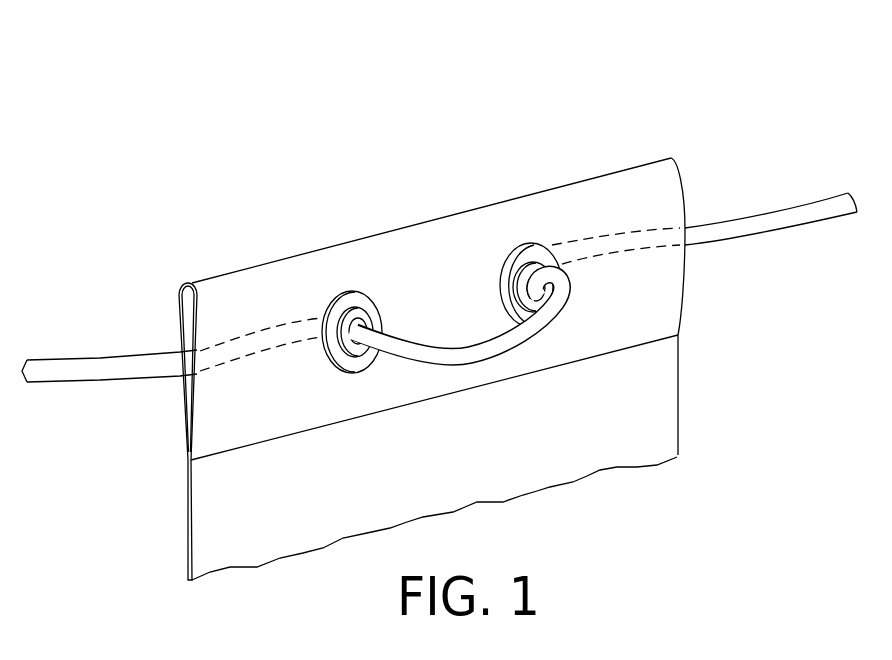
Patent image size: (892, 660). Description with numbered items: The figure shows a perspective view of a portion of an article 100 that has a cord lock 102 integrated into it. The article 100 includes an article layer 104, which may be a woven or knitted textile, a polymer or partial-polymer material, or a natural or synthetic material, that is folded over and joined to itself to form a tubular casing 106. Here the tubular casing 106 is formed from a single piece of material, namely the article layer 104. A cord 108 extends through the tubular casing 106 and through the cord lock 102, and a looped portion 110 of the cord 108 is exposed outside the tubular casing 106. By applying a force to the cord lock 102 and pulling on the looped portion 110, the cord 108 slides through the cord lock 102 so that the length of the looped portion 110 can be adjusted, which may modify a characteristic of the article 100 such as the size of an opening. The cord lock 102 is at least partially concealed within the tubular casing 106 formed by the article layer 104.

The article 100 is at (703, 77).
The cord lock 102 is at (522, 277).
The article layer 104 is at (653, 395).
The tubular casing 106 is at (183, 330).
The cord 108 is at (752, 230).
The looped portion 110 is at (552, 320).